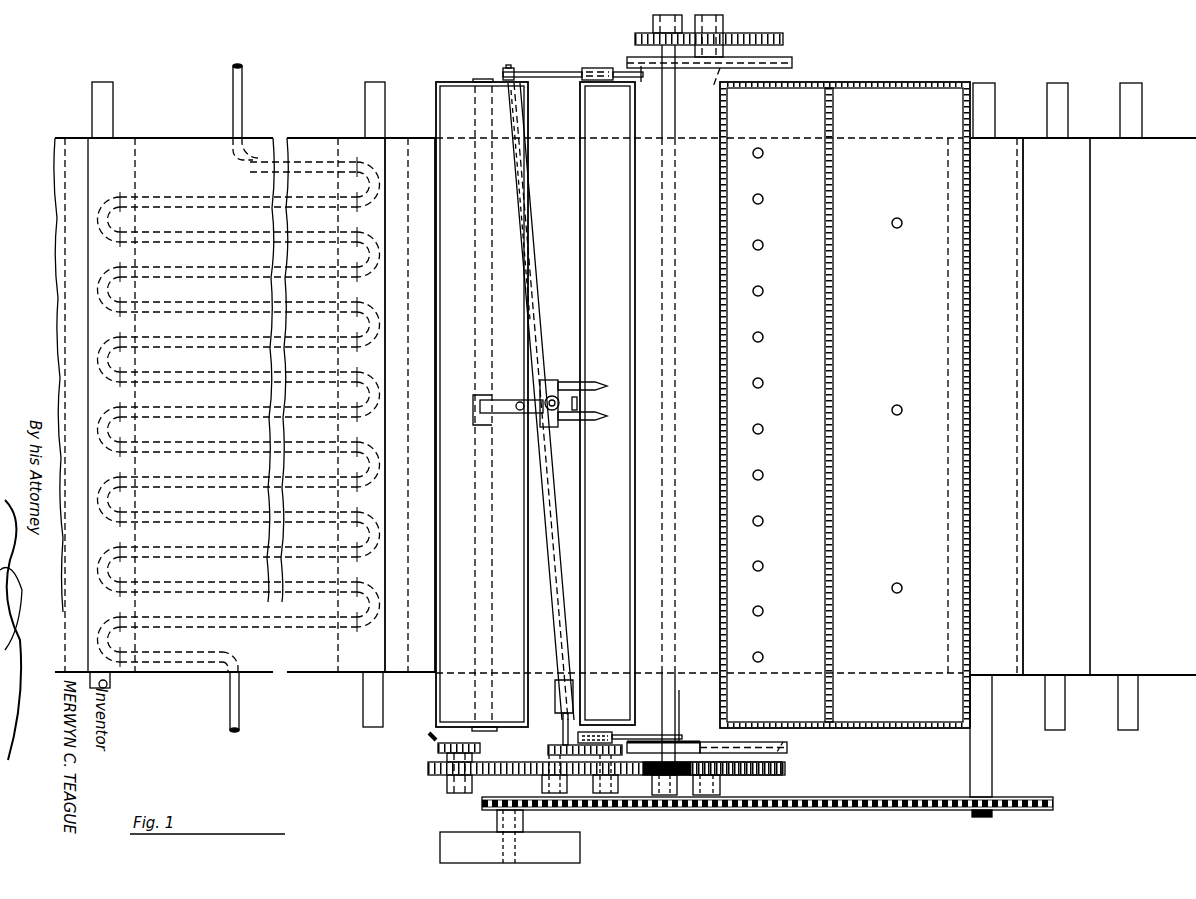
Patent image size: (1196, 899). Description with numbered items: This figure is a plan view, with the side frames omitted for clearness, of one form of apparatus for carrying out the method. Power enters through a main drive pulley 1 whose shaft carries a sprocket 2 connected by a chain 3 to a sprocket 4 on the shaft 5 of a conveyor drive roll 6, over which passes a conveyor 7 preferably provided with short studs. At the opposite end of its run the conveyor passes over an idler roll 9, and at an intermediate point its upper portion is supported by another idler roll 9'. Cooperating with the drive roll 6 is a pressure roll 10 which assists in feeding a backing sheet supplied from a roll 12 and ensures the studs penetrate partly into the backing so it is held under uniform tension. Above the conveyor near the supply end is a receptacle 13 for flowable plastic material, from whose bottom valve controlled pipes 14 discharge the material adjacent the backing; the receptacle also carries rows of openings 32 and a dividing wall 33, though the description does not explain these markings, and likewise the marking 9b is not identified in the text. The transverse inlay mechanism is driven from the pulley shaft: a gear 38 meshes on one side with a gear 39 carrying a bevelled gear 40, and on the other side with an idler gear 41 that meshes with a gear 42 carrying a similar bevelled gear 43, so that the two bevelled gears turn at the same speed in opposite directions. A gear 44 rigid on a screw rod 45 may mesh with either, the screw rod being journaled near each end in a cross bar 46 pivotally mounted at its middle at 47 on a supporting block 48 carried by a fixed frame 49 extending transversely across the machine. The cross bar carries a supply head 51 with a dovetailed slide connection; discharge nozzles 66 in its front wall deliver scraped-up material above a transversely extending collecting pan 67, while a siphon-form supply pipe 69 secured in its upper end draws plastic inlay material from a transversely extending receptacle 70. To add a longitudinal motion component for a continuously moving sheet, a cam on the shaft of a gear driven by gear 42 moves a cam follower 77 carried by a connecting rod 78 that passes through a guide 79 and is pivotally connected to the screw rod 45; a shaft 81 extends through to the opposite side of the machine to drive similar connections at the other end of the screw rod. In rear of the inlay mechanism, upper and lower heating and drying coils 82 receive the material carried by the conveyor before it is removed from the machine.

The main drive pulley 1 is at (578, 845).
The sprocket 2 is at (526, 808).
The chain 3 is at (818, 810).
The sprocket 4 is at (994, 818).
The shaft 5 is at (990, 762).
The conveyor drive roll 6 is at (1017, 662).
The conveyor 7 is at (415, 672).
The idler roll 9 is at (119, 685).
The idler roll 9' is at (418, 423).
The pipe outlet 9b is at (166, 654).
The pressure roll 10 is at (1090, 675).
The roll 12 is at (1184, 675).
The receptacle 13 is at (899, 82).
The valve controlled pipes 14 is at (897, 228).
The perforations 32 is at (763, 249).
The partition 33 is at (720, 609).
The gear 38 is at (518, 762).
The gear 39 is at (440, 780).
The bevelled gear 40 is at (440, 749).
The idler gear 41 is at (567, 777).
The gear 42 is at (618, 778).
The bevelled gear 43 is at (620, 742).
The gear 44 is at (555, 746).
The screw rod 45 is at (562, 718).
The cross bar 46 is at (560, 655).
The pivot 47 is at (502, 413).
The supporting block 48 is at (508, 398).
The fixed frame 49 is at (540, 510).
The supply head 51 is at (549, 380).
The discharge nozzles 66 is at (607, 416).
The collecting pan 67 is at (632, 302).
The plastic inlay material supply pipe 69 is at (518, 410).
The plastic inlay material receptacle 70 is at (437, 468).
The cam follower 77 is at (695, 742).
The connecting rod 78 is at (540, 72).
The guide 79 is at (598, 68).
The shaft 81 is at (672, 131).
The heating and drying coils 82 is at (173, 198).